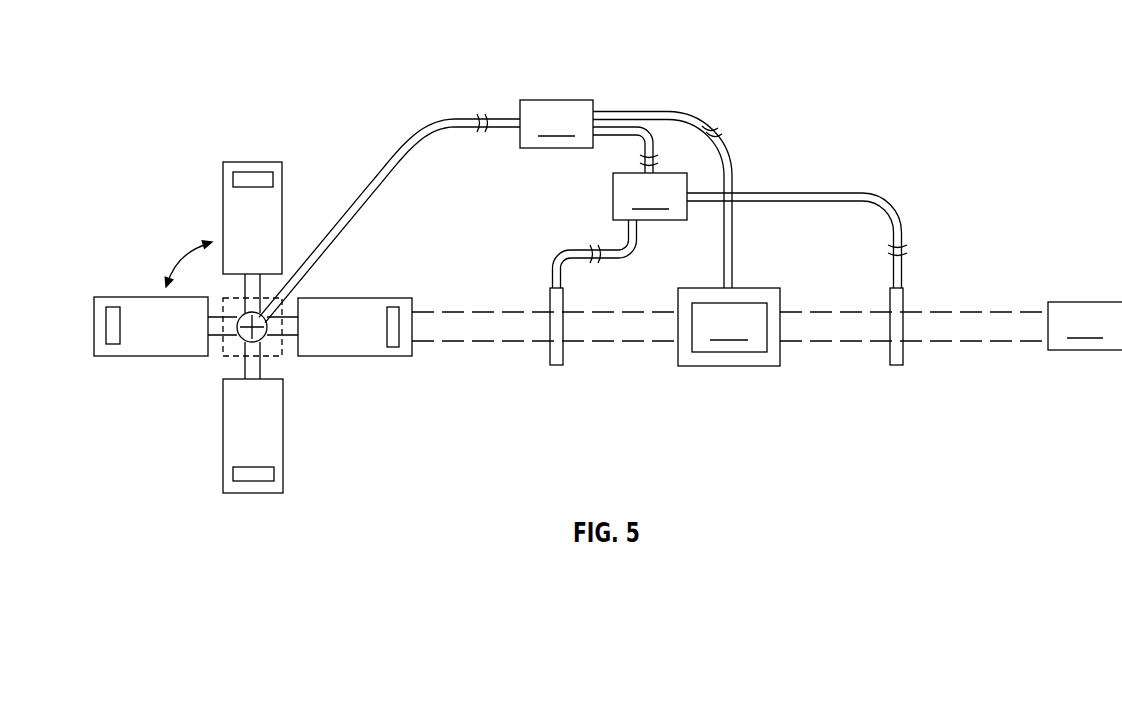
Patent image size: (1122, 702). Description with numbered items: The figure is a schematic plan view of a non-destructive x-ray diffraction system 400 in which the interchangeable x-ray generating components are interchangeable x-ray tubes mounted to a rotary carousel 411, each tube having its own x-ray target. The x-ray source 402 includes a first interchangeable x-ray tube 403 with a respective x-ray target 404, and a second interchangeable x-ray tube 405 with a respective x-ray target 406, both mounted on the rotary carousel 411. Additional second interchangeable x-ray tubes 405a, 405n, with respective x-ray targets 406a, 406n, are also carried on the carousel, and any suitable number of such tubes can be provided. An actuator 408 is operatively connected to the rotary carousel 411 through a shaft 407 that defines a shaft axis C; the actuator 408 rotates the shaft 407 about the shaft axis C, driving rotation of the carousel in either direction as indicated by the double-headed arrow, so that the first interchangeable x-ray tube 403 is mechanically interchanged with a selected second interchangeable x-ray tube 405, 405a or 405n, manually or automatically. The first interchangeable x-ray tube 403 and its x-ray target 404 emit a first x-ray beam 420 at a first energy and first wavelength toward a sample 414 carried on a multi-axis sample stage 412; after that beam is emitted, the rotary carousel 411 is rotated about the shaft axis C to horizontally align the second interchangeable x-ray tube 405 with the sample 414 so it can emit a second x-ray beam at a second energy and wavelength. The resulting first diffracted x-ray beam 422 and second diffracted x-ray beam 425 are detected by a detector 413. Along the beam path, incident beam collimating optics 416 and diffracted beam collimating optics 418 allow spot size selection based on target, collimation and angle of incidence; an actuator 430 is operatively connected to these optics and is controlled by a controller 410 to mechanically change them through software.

The x-ray diffraction system 400 is at (303, 82).
The x-ray source 402 is at (392, 283).
The first interchangeable x-ray tube 403 is at (373, 357).
The x-ray target 404 is at (393, 338).
The second interchangeable x-ray tube 405 is at (235, 212).
The second interchangeable x-ray tube 405a is at (137, 345).
The second interchangeable x-ray tube 405n is at (233, 432).
The x-ray target 406 is at (252, 177).
The x-ray target 406a is at (113, 316).
The x-ray target 406n is at (254, 473).
The shaft 407 is at (246, 342).
The actuator 408 is at (283, 357).
The controller 410 is at (556, 124).
The rotary carousel 411 is at (276, 284).
The multi-axis sample stage 412 is at (782, 354).
The detector 413 is at (1085, 326).
The sample 414 is at (729, 327).
The incident beam collimating optics 416 is at (555, 367).
The diffracted beam collimating optics 418 is at (897, 367).
The first x-ray beam 420 is at (502, 342).
The first diffracted x-ray beam 422 is at (988, 312).
The second diffracted x-ray beam 425 is at (988, 342).
The actuator 430 is at (640, 173).
The shaft axis C is at (248, 314).